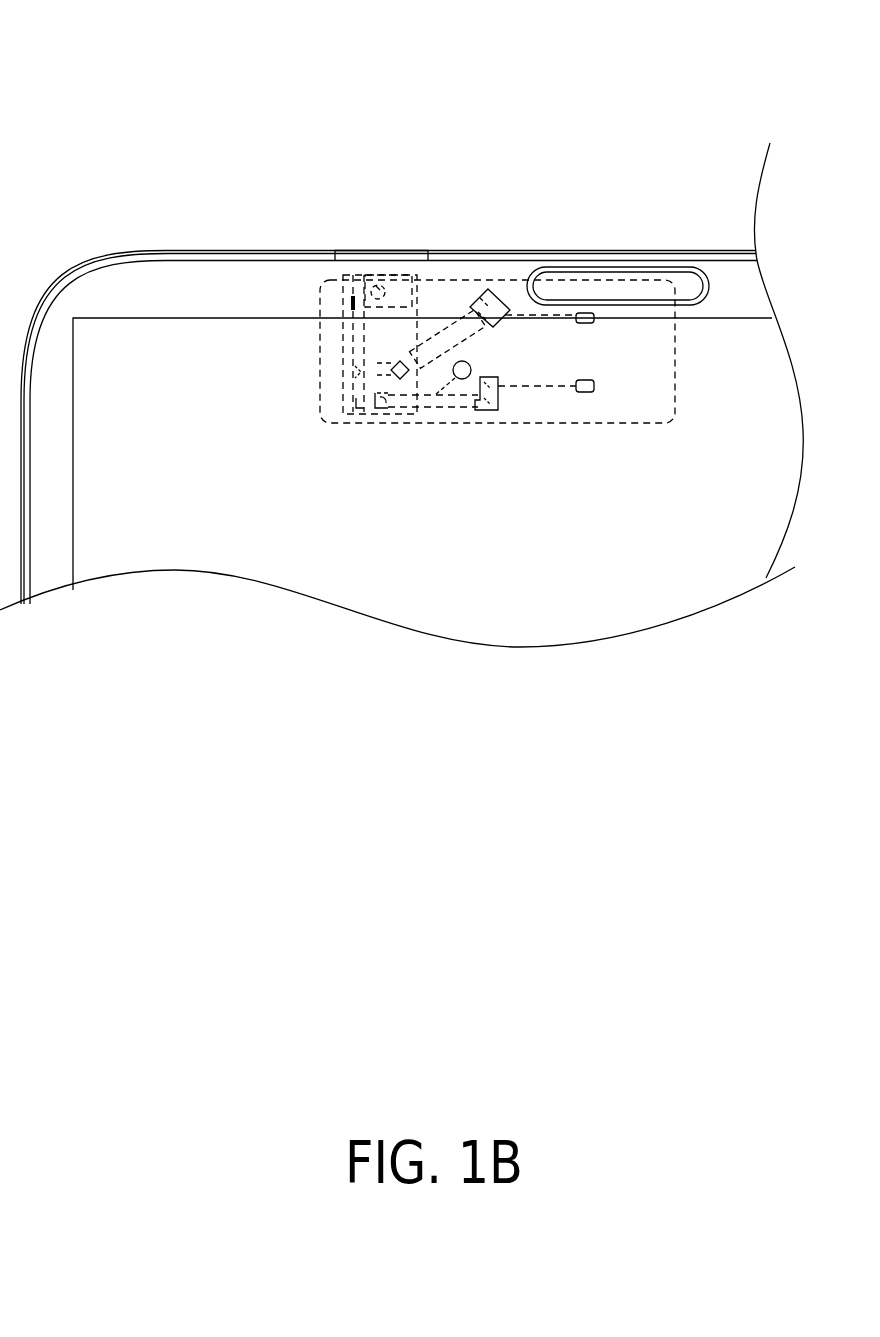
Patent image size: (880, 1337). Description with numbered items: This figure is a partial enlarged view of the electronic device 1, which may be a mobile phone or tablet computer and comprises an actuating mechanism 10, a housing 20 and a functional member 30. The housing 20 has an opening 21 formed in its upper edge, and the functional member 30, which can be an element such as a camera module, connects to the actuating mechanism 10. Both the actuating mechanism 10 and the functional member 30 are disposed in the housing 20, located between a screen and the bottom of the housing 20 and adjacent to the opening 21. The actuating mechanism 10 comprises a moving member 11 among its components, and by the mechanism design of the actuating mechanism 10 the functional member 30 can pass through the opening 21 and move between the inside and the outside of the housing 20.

The electronic device 1 is at (117, 81).
The actuating mechanism 10 is at (393, 432).
The moving member 11 is at (340, 344).
The housing 20 is at (210, 258).
The opening 21 is at (403, 252).
The functional member 30 is at (365, 262).